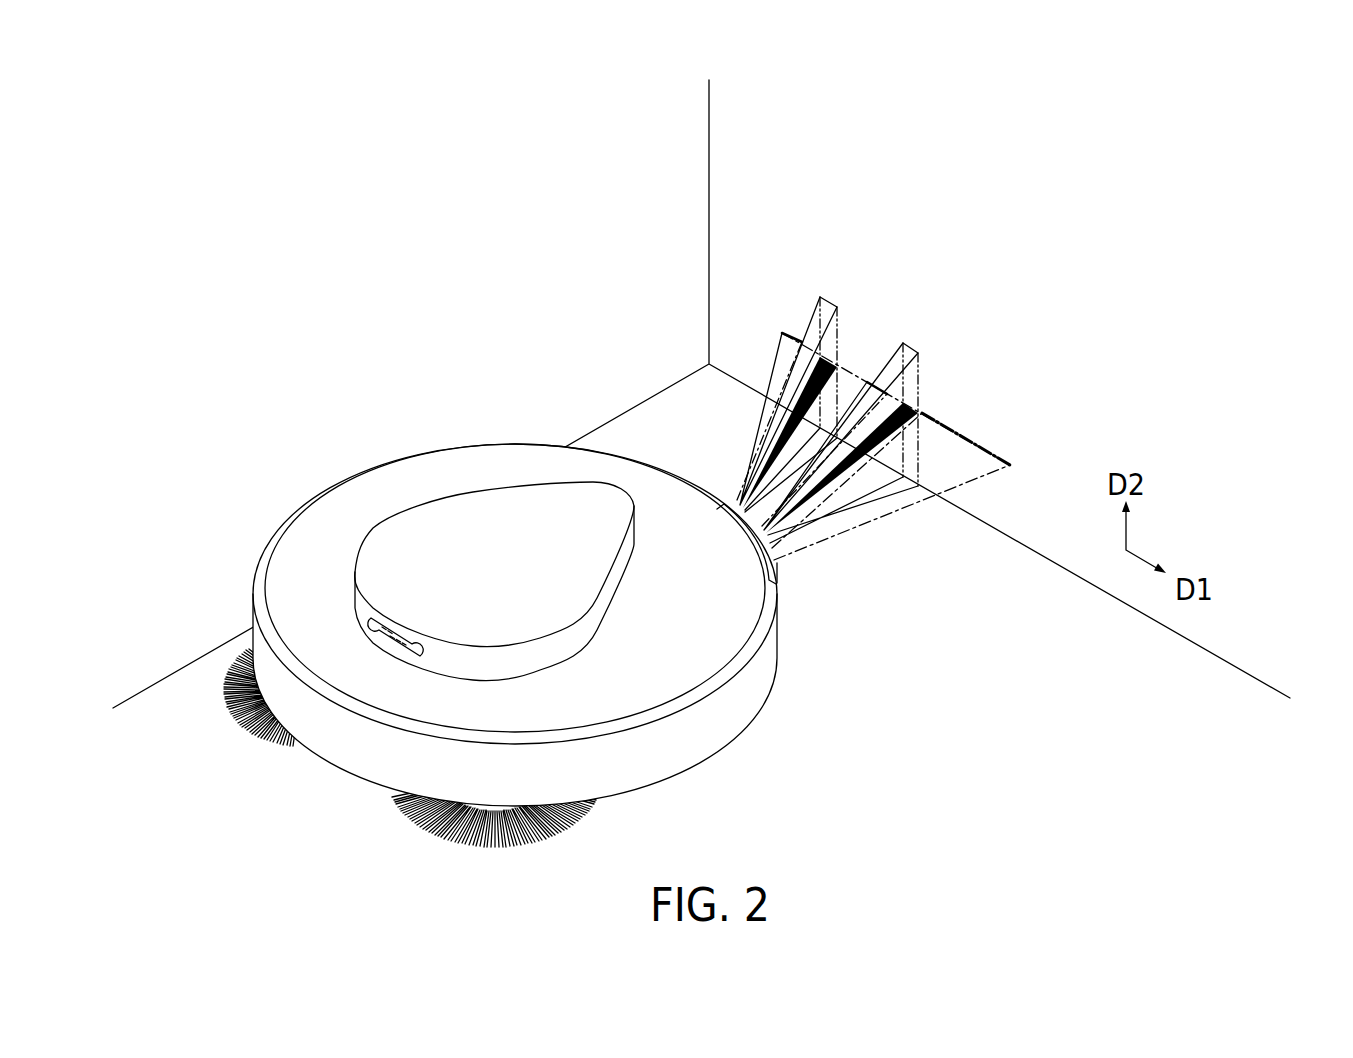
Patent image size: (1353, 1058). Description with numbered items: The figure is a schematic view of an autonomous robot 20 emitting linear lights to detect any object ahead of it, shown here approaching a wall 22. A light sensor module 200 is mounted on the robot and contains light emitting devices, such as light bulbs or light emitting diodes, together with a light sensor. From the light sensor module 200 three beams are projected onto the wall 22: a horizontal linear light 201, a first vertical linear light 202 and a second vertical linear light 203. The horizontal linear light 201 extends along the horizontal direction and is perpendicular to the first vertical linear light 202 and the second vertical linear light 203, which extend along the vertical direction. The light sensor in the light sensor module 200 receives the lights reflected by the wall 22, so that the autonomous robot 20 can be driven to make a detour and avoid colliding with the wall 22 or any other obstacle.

The autonomous robot 20 is at (368, 466).
The light sensor module 200 is at (778, 583).
The horizontal linear light 201 is at (952, 428).
The first vertical linear light 202 is at (833, 300).
The second vertical linear light 203 is at (906, 343).
The wall 22 is at (1092, 297).